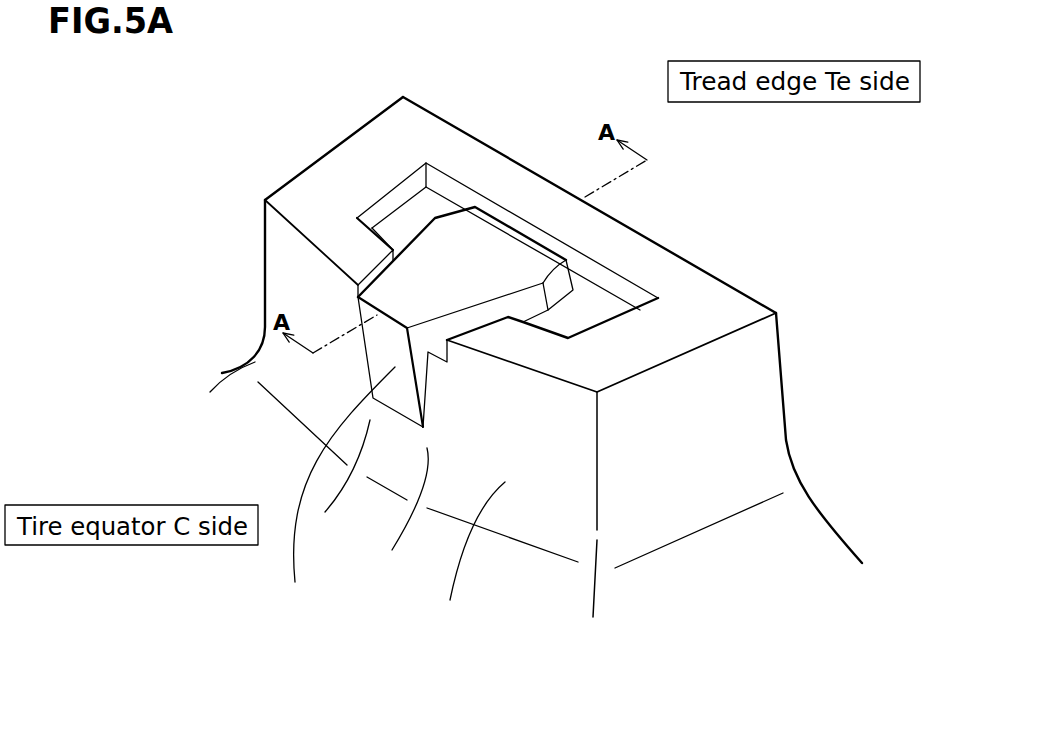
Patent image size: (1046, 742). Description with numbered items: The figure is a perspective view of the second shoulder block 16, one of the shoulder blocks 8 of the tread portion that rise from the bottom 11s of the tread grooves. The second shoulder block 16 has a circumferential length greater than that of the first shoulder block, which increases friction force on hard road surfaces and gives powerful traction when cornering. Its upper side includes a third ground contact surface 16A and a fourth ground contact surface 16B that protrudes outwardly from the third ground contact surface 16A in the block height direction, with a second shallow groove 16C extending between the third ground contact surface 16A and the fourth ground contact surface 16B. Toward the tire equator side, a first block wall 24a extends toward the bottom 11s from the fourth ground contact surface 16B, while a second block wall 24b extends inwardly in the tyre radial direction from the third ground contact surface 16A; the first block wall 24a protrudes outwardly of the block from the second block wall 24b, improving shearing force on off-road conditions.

The shoulder block 8 is at (823, 203).
The second shoulder block 16 is at (797, 272).
The third ground contact surface 16A is at (355, 167).
The fourth ground contact surface 16B is at (487, 247).
The second shallow groove 16C is at (595, 302).
The bottom of the tread grooves 11s is at (373, 550).
The first block wall 24a is at (333, 492).
The second block wall 24b is at (466, 557).